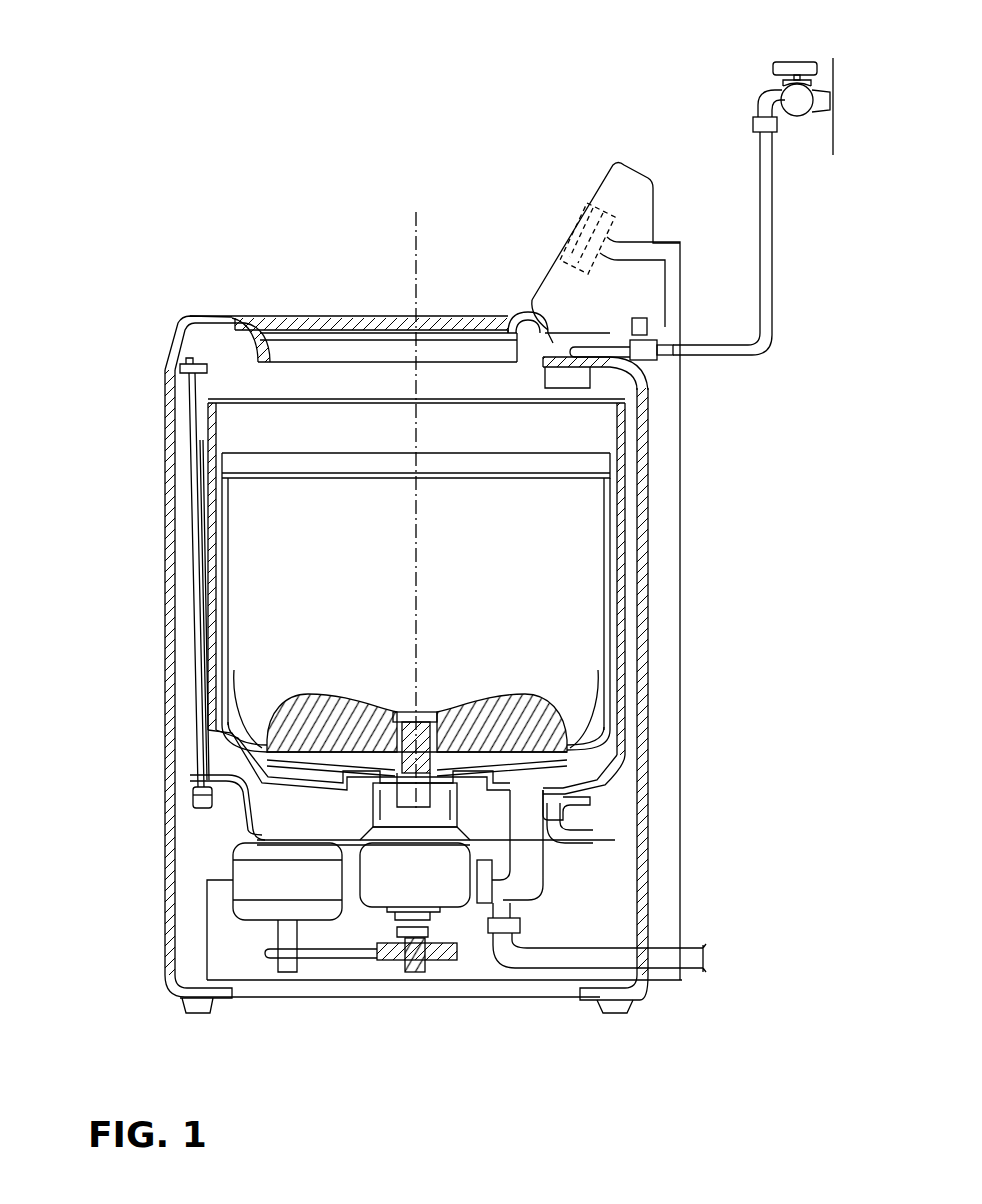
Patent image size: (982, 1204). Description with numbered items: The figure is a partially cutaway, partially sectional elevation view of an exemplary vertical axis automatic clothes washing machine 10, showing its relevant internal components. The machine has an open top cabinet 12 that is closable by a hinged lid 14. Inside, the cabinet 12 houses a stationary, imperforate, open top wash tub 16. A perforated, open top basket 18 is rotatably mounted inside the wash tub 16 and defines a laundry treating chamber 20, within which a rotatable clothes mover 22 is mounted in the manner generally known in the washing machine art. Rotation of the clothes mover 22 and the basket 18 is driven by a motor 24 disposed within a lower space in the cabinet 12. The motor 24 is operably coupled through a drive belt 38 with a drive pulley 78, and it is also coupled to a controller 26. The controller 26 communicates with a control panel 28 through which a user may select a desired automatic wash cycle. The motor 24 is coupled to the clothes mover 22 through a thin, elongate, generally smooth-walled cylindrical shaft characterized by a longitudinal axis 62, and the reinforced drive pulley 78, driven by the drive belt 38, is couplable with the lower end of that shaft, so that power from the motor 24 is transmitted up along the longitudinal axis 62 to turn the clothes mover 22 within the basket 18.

The vertical axis washing machine 10 is at (135, 385).
The cabinet 12 is at (647, 498).
The hinged lid 14 is at (293, 316).
The wash tub 16 is at (622, 583).
The basket 18 is at (228, 576).
The laundry treating chamber 20 is at (322, 555).
The clothes mover 22 is at (318, 697).
The motor 24 is at (232, 857).
The controller 26 is at (575, 245).
The control panel 28 is at (562, 251).
The drive belt 38 is at (335, 953).
The longitudinal axis 62 is at (413, 252).
The drive pulley 78 is at (390, 953).